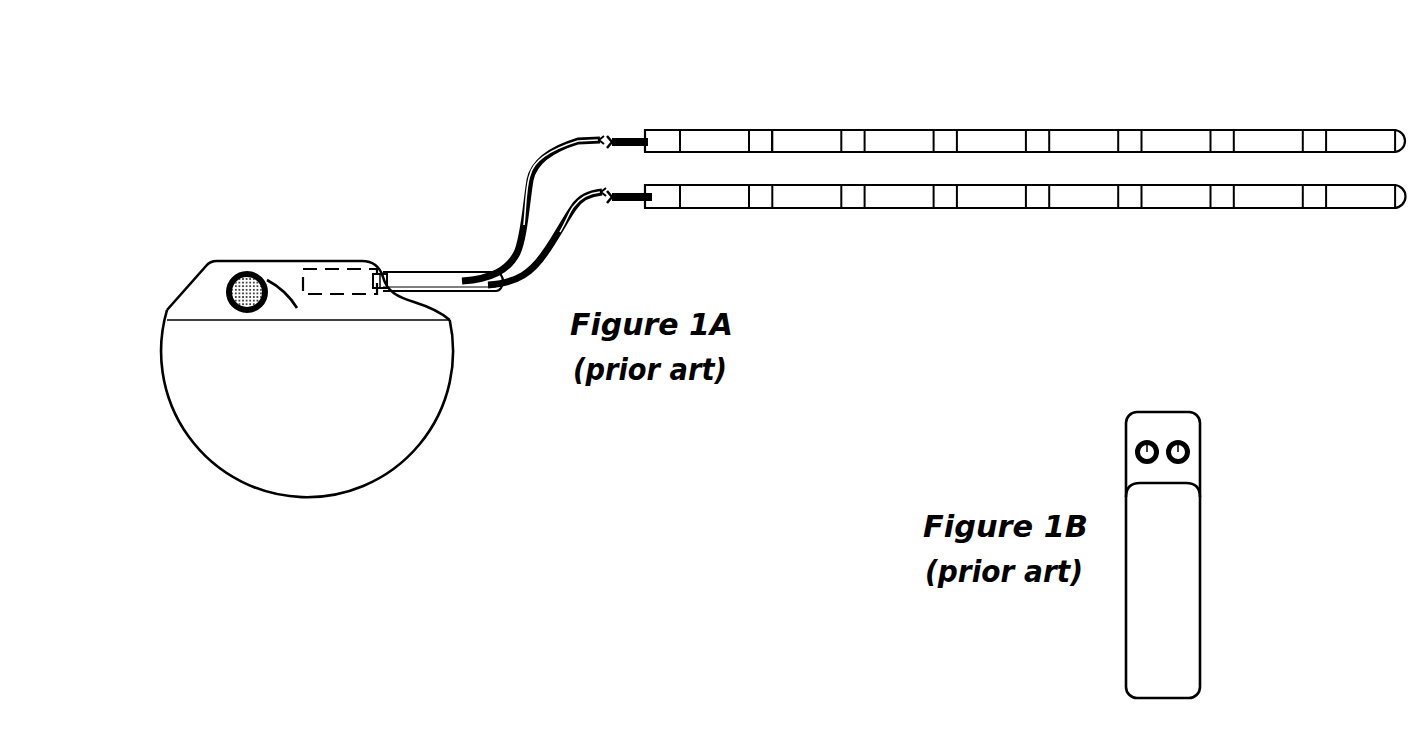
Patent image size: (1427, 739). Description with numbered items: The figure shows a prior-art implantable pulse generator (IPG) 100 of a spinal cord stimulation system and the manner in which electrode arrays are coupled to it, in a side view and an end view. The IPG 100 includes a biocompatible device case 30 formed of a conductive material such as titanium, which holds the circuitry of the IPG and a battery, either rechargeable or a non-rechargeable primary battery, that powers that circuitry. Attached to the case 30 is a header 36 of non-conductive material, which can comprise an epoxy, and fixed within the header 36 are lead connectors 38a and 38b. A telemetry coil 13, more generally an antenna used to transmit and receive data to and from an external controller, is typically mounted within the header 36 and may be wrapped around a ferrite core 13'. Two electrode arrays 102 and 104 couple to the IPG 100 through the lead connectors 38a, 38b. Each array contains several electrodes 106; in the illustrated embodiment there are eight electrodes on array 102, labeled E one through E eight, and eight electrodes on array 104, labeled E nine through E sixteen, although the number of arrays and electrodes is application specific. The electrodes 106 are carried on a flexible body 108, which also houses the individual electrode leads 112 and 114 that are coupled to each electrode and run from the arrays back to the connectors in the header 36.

In FIG. 1A, the implantable pulse generator 100 is at (266, 170).
In FIG. 1B, the implantable pulse generator 100 is at (1161, 393).
In FIG. 1A, the device case 30 is at (453, 377).
In FIG. 1B, the device case 30 is at (1200, 513).
In FIG. 1A, the header 36 is at (200, 277).
In FIG. 1B, the header 36 is at (1200, 463).
In FIG. 1A, the telemetry coil 13 is at (231, 314).
In FIG. 1A, the ferrite core 13' is at (252, 271).
In FIG. 1B, the lead connector 38a is at (1142, 440).
In FIG. 1B, the lead connector 38b is at (1183, 440).
In FIG. 1A, the electrode array 102 is at (1011, 113).
In FIG. 1A, the electrode array 104 is at (740, 236).
In FIG. 1A, the electrodes 106 is at (900, 130).
In FIG. 1A, the flexible body 108 is at (758, 130).
In FIG. 1A, the electrode lead 112 is at (539, 145).
In FIG. 1A, the electrode lead 114 is at (585, 223).